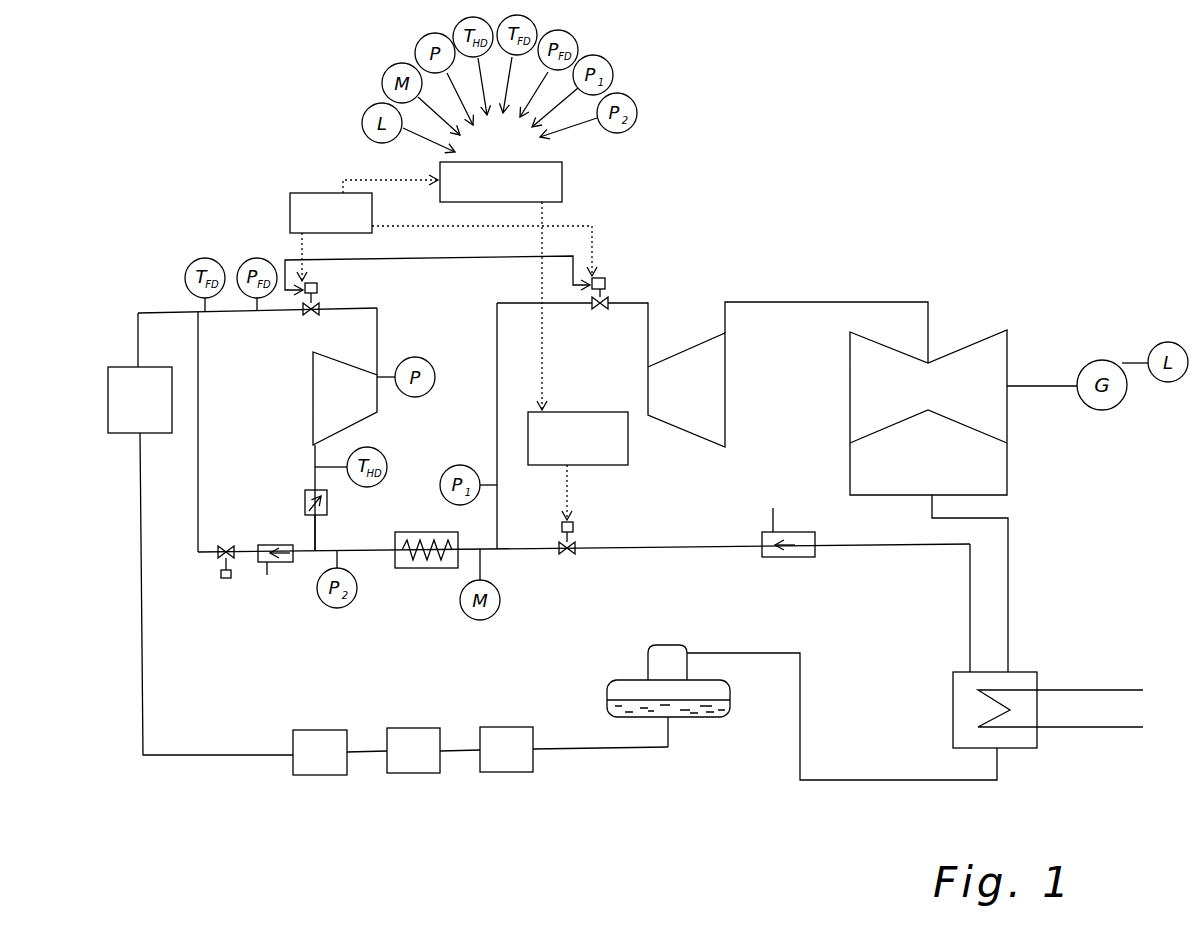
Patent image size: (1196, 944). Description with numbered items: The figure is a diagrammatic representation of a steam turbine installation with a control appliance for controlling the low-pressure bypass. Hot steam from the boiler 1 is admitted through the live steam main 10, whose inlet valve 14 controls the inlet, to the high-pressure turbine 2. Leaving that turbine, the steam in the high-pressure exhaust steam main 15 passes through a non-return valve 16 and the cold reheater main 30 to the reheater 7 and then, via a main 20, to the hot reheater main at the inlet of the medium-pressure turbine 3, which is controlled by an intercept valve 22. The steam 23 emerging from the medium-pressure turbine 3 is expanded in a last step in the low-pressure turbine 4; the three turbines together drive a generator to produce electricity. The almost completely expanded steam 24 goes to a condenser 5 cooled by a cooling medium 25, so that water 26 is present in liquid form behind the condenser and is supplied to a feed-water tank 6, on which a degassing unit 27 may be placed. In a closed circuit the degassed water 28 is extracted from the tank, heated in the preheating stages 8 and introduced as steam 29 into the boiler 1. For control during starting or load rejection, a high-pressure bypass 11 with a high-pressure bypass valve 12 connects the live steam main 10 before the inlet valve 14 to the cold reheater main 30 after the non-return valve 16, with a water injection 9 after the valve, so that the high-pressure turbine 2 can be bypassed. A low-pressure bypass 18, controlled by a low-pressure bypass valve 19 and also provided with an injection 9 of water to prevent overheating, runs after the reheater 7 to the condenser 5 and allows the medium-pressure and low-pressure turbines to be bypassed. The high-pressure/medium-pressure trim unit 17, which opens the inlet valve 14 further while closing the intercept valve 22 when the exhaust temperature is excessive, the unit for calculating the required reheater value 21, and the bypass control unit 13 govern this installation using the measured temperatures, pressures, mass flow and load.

The boiler 1 is at (133, 416).
The high-pressure turbine 2 is at (333, 416).
The medium-pressure turbine 3 is at (681, 411).
The low-pressure turbine 4 is at (878, 408).
The condenser 5 is at (952, 708).
The feed-water tank 6 is at (683, 718).
The reheater 7 is at (423, 568).
The preheating stages 8 is at (317, 777).
The water injection 9 is at (287, 562).
The live steam main 10 is at (155, 312).
The high-pressure bypass 11 is at (202, 450).
The high-pressure bypass valve 12 is at (225, 580).
The bypass control unit 13 is at (563, 452).
The inlet valve 14 is at (303, 315).
The high-pressure exhaust steam main 15 is at (313, 470).
The non-return valve 16 is at (305, 498).
The high-pressure/medium-pressure trim unit 17 is at (320, 227).
The low-pressure bypass 18 is at (525, 550).
The low-pressure bypass valve 19 is at (575, 520).
The main 20 is at (495, 408).
The unit for calculating the required reheater value 21 is at (490, 196).
The intercept valve 22 is at (607, 275).
The steam emerging from the medium-pressure turbine 23 is at (813, 300).
The almost completely expanded steam 24 is at (1008, 610).
The cooling medium 25 is at (1088, 687).
The water 26 is at (867, 782).
The degassing unit 27 is at (648, 648).
The degassed water 28 is at (607, 748).
The steam 29 is at (202, 758).
The cold reheater main 30 is at (313, 540).